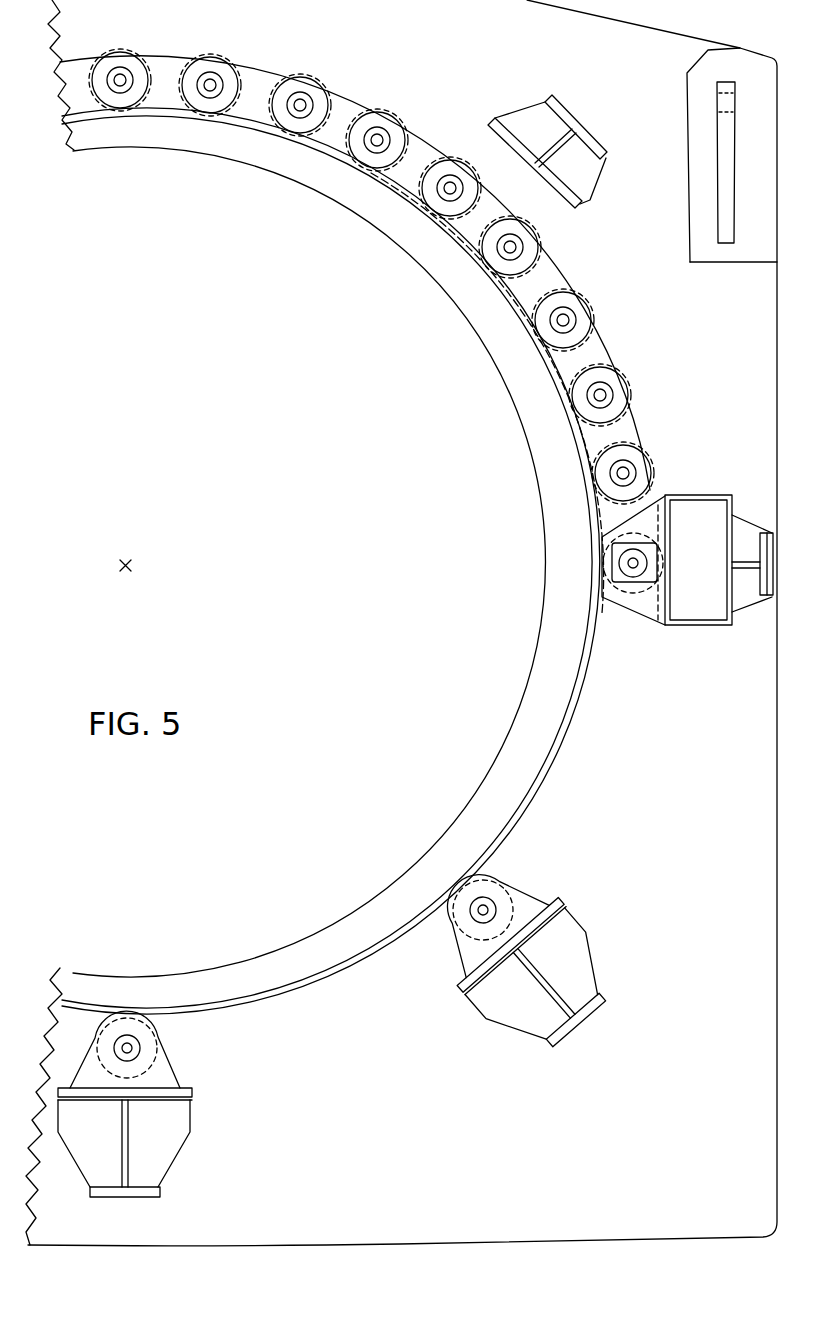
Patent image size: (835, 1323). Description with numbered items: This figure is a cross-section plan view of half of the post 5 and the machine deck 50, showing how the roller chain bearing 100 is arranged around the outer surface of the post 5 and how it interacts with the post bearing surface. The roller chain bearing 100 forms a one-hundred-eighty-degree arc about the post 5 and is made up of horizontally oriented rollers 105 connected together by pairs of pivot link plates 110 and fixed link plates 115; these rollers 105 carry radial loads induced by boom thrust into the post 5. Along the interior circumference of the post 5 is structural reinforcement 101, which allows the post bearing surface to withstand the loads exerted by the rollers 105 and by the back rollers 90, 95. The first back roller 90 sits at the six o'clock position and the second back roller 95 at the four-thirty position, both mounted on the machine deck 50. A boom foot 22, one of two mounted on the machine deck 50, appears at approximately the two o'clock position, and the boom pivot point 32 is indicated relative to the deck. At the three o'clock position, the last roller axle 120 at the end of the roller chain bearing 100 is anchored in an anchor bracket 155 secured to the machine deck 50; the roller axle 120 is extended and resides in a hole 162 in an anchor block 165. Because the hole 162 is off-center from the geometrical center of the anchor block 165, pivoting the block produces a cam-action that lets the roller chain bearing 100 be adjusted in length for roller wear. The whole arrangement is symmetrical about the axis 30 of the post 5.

The post 5 is at (248, 126).
The boom foot 22 is at (686, 106).
The axis 30 is at (133, 566).
The boom pivot point 32 is at (736, 98).
The machine deck 50 is at (510, 65).
The first back roller 90 is at (157, 1028).
The second back roller 95 is at (512, 882).
The roller chain bearing 100 is at (390, 307).
The structural reinforcement 101 is at (446, 268).
The rollers 105 is at (312, 79).
The pivot link plates 110 is at (258, 80).
The fixed link plates 115 is at (172, 68).
The roller axle 120 is at (576, 576).
The anchor bracket 155 is at (631, 616).
The hole 162 is at (623, 562).
The anchor block 165 is at (602, 572).